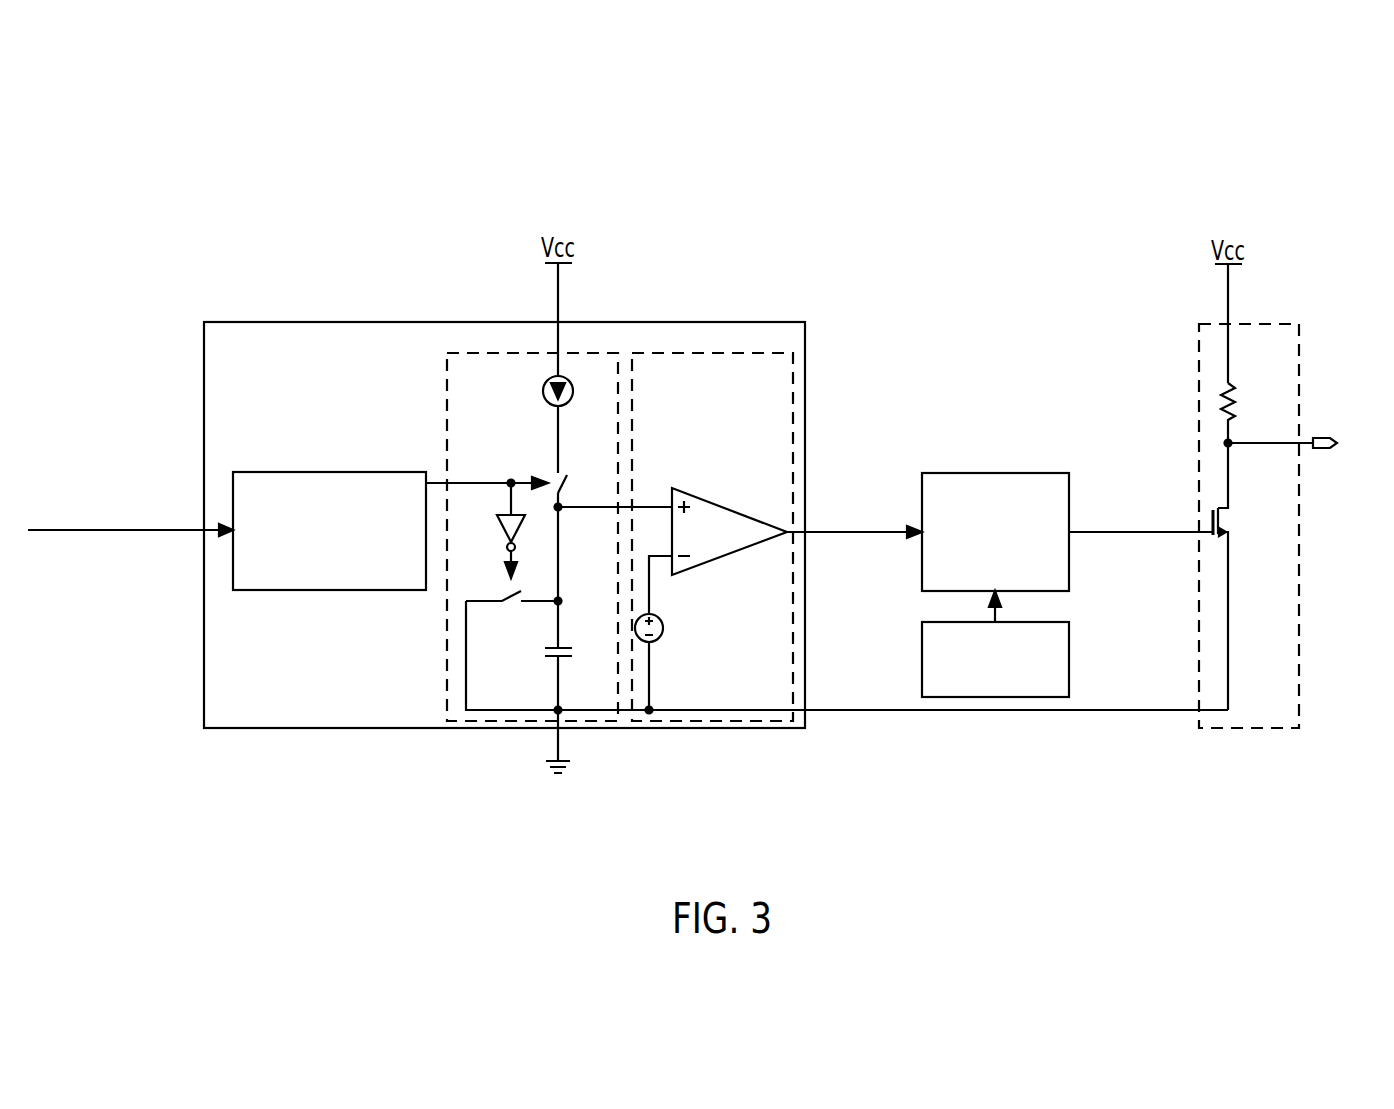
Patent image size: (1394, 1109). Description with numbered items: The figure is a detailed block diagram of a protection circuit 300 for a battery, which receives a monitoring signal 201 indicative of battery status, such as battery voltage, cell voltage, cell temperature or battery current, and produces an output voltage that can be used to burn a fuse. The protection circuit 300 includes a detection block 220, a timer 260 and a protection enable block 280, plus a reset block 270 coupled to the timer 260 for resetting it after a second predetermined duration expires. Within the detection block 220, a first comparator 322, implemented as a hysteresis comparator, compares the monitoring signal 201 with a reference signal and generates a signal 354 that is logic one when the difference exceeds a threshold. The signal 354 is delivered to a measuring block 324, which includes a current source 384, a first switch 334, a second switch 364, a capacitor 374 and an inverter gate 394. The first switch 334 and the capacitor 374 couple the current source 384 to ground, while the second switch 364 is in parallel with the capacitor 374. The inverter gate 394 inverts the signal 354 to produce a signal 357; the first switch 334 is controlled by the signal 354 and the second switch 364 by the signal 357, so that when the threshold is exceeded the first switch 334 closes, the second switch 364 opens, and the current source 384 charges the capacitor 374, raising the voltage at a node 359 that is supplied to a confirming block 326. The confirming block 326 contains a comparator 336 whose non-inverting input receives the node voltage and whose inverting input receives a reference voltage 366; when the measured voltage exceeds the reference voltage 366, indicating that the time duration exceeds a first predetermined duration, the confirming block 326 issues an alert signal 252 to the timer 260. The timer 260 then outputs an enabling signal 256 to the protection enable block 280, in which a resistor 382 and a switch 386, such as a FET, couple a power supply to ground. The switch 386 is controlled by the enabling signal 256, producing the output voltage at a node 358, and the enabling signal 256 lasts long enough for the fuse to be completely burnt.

The protection circuit 300 is at (285, 158).
The monitoring signal 201 is at (118, 532).
The first comparator 322 is at (365, 472).
The detection block 220 is at (745, 322).
The measuring block 324 is at (484, 353).
The confirming block 326 is at (734, 353).
The current source 384 is at (546, 390).
The signal 354 is at (484, 483).
The first switch 334 is at (565, 486).
The node 359 is at (565, 509).
The inverter gate 394 is at (508, 508).
The signal 357 is at (507, 554).
The second switch 364 is at (512, 592).
The capacitor 374 is at (566, 646).
The comparator 336 is at (708, 498).
The reference voltage 366 is at (661, 618).
The alert signal 252 is at (834, 534).
The timer 260 is at (1008, 473).
The reset block 270 is at (1008, 622).
The enabling signal 256 is at (1098, 534).
The protection enable block 280 is at (1300, 356).
The resistor 382 is at (1236, 410).
The node 358 is at (1325, 450).
The switch 386 is at (1230, 502).